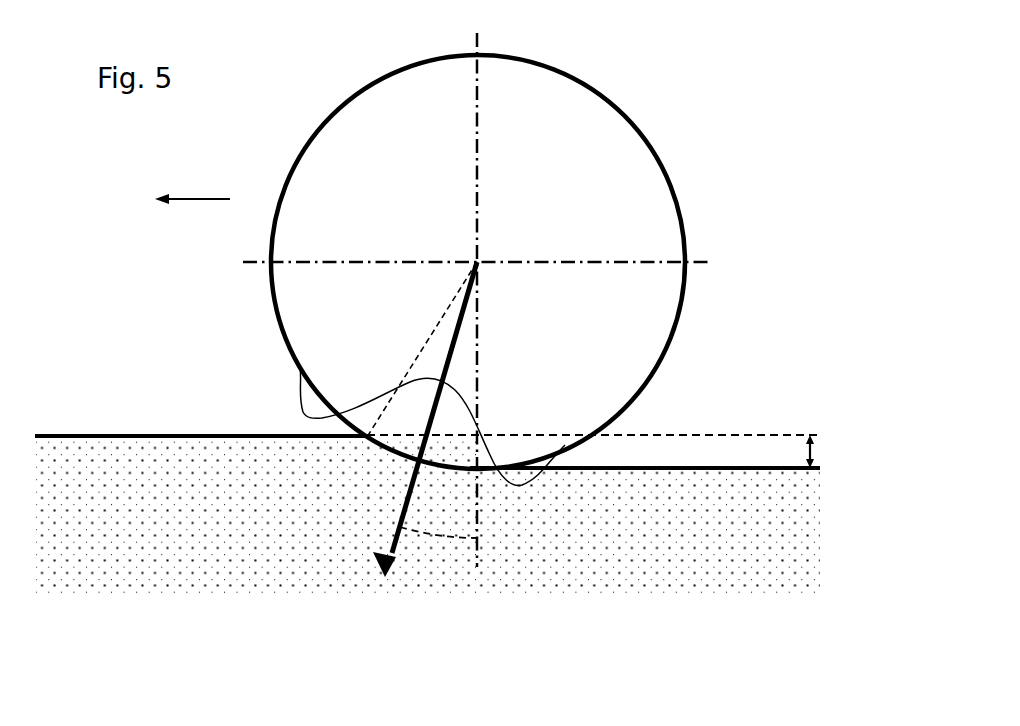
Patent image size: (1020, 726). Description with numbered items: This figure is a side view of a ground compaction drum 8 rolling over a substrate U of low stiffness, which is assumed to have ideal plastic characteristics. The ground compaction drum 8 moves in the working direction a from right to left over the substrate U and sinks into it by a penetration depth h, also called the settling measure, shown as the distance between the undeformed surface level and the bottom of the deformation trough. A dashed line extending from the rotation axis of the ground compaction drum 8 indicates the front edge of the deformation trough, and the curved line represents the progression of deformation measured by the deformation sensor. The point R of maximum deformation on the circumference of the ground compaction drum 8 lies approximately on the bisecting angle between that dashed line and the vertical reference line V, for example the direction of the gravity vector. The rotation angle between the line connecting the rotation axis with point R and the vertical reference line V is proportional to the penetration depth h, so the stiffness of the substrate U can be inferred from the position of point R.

The ground compaction drum 8 is at (668, 168).
The vertical reference line V is at (477, 75).
The substrate U is at (160, 452).
The point of maximum deformation R is at (410, 463).
The penetration depth h is at (822, 451).
The working direction a is at (181, 199).